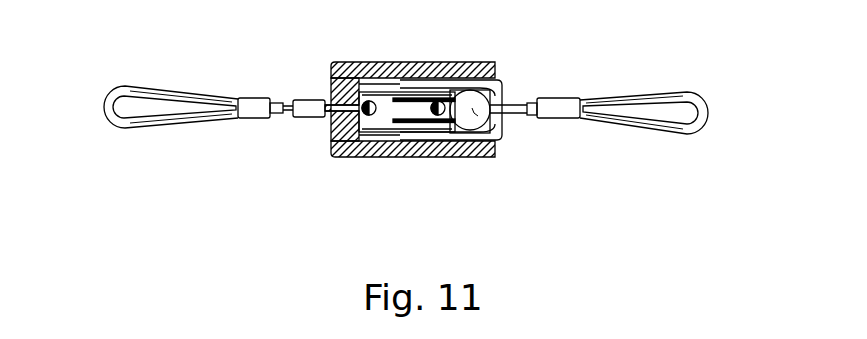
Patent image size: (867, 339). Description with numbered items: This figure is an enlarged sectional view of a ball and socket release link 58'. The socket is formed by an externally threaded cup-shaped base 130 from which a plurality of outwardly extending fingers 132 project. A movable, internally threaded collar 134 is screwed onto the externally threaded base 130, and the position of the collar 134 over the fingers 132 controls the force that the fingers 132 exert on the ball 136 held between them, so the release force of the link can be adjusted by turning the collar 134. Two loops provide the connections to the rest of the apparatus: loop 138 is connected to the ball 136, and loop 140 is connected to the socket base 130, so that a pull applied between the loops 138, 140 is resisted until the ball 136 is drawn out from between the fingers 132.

The ball and socket release link 58' is at (423, 108).
The cup-shaped base 130 is at (338, 140).
The fingers 132 is at (510, 73).
The collar 134 is at (343, 158).
The ball 136 is at (487, 120).
The loop 138 is at (673, 93).
The loop 140 is at (125, 132).